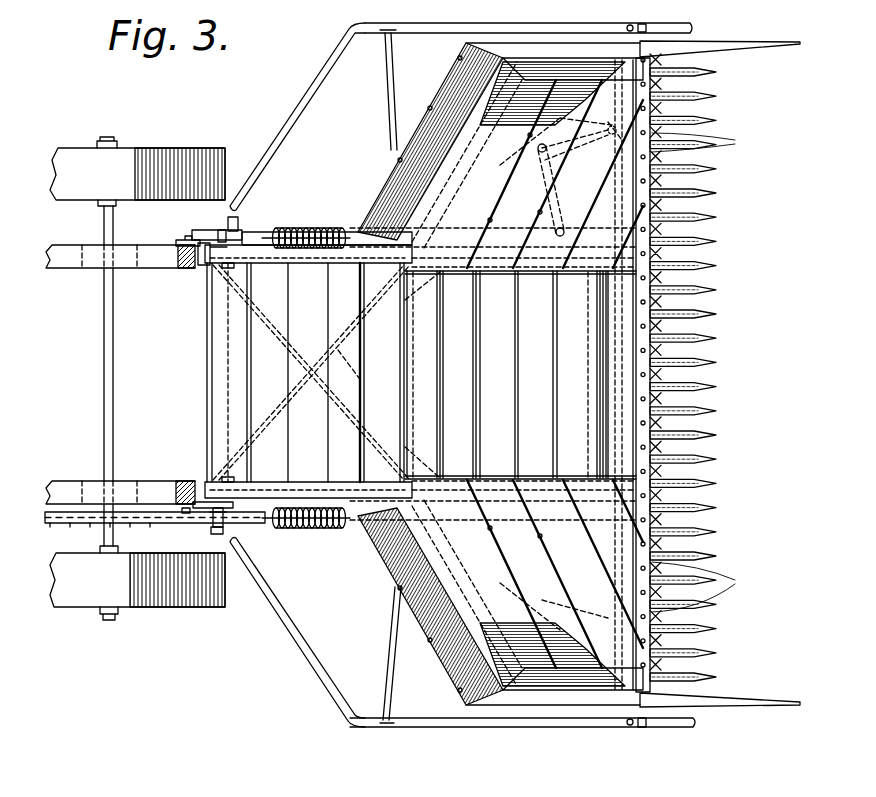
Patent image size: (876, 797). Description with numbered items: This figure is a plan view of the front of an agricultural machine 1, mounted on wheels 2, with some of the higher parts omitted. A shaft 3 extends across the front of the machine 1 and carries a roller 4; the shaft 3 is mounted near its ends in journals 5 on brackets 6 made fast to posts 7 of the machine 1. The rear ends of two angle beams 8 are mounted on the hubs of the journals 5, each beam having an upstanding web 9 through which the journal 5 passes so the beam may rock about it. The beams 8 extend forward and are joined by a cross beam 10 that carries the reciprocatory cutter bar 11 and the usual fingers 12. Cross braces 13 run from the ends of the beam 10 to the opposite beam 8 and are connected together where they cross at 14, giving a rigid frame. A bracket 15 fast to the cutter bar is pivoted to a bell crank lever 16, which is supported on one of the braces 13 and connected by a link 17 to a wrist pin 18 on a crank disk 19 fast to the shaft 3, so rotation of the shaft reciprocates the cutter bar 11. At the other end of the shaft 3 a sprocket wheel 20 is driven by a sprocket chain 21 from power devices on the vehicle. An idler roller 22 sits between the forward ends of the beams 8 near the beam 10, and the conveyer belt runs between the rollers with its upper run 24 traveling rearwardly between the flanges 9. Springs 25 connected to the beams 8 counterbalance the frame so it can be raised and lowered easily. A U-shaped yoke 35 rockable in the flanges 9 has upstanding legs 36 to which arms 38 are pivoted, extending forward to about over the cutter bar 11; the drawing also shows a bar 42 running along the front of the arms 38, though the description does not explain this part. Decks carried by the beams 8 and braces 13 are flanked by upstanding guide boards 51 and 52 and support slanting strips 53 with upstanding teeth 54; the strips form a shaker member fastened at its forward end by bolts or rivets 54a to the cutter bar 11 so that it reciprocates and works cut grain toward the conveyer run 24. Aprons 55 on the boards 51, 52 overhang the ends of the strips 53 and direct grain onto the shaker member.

The machine 1 is at (62, 486).
The wheels 2 is at (154, 150).
The shaft 3 is at (211, 530).
The roller 4 is at (204, 268).
The journals 5 is at (229, 268).
The brackets 6 is at (178, 244).
The posts 7 is at (176, 262).
The beams 8 is at (347, 263).
The web 9 is at (292, 234).
The beam 10 is at (620, 198).
The cutter bar 11 is at (660, 418).
The fingers 12 is at (712, 318).
The cross braces 13 is at (388, 343).
The connection of cross braces 14 is at (356, 368).
The bracket 15 is at (610, 136).
The bell crank lever 16 is at (552, 205).
The link 17 is at (262, 232).
The wrist pin 18 is at (240, 216).
The crank disk 19 is at (213, 232).
The sprocket wheel 20 is at (258, 524).
The sprocket chain 21 is at (58, 524).
The roller 22 is at (602, 368).
The upper run 24 is at (458, 374).
The spring 25 is at (325, 230).
The yoke 35 is at (420, 364).
The legs 36 is at (387, 106).
The arm 38 is at (344, 38).
The top bar 42 is at (640, 24).
The guide board 51 is at (748, 42).
The guide board 52 is at (440, 98).
The strips 53 is at (545, 274).
The teeth 54 is at (536, 228).
The bolts or rivets 54a is at (716, 370).
The aprons 55 is at (490, 105).